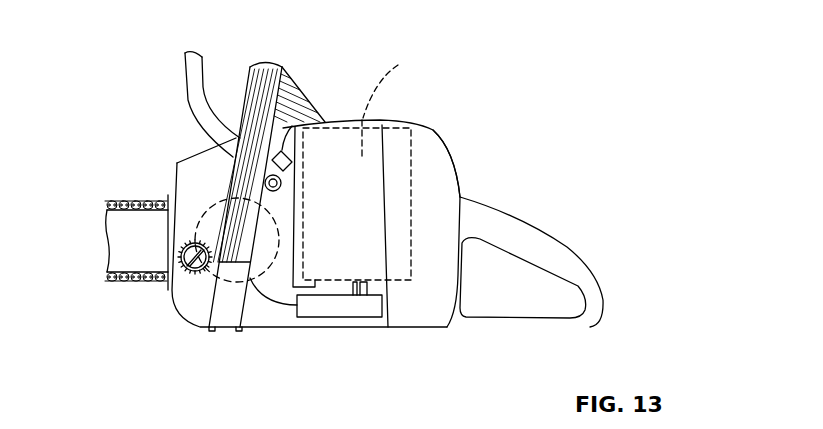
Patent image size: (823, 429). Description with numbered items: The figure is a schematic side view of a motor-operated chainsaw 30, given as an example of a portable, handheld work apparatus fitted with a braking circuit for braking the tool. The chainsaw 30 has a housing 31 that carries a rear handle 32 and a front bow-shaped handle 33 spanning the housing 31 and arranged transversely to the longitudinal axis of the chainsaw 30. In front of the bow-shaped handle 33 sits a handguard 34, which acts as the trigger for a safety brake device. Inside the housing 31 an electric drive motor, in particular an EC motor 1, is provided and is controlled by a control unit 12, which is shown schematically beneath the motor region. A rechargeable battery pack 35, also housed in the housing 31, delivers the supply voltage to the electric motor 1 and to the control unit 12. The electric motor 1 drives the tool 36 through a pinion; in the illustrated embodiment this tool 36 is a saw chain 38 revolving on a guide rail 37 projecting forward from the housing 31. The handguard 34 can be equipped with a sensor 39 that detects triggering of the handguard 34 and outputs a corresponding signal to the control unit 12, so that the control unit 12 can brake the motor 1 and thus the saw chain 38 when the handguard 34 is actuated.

The EC motor 1 is at (206, 214).
The control unit 12 is at (337, 308).
The motor-operated chainsaw 30 is at (497, 185).
The housing 31 is at (433, 130).
The rear handle 32 is at (547, 257).
The front bow-shaped handle 33 is at (283, 130).
The handguard 34 is at (202, 93).
The rechargeable battery pack 35 is at (394, 91).
The tool 36 is at (105, 177).
The guide rail 37 is at (130, 242).
The saw chain 38 is at (138, 211).
The sensor 39 is at (361, 117).